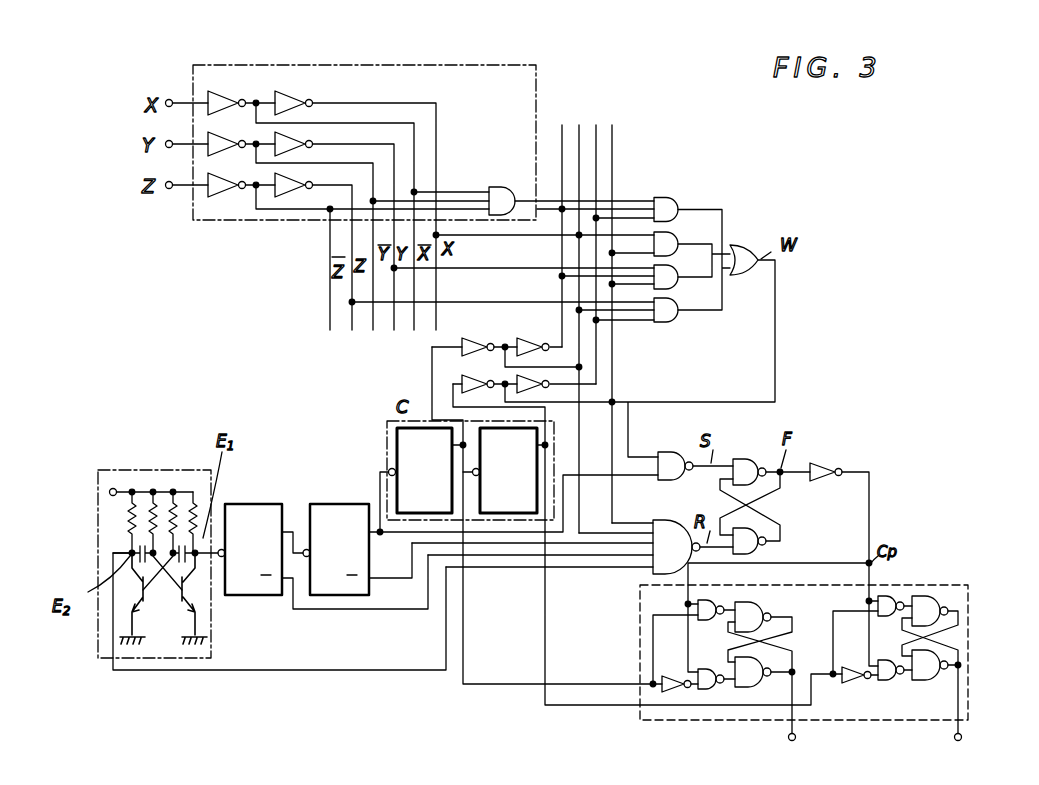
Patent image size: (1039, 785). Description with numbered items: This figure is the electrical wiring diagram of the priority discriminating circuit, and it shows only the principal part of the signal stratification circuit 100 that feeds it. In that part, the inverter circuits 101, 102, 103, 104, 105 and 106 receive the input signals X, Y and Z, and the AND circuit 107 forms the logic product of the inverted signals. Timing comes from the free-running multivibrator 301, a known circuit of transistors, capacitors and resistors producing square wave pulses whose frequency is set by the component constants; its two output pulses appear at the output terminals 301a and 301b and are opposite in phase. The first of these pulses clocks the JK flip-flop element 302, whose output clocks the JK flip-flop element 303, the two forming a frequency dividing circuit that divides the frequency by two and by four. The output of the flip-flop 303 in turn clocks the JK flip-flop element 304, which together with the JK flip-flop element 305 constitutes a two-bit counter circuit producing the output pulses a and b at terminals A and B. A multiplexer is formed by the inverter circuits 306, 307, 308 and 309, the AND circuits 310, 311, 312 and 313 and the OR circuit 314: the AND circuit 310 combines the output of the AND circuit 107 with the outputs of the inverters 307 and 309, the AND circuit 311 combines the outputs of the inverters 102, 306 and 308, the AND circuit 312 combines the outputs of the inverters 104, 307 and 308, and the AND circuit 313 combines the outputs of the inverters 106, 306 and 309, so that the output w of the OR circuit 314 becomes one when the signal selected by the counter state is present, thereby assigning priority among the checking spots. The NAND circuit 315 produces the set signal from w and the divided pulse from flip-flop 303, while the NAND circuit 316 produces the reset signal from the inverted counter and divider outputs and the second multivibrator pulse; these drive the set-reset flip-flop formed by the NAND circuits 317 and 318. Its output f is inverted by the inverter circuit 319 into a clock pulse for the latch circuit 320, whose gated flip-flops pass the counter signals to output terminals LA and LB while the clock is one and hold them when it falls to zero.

The signal stratification circuit 100 is at (540, 70).
The inverter circuit 101 is at (211, 97).
The inverter circuit 102 is at (285, 93).
The inverter circuit 103 is at (212, 138).
The inverter circuit 104 is at (287, 134).
The inverter circuit 105 is at (212, 180).
The inverter circuit 106 is at (292, 200).
The AND circuit 107 is at (504, 188).
The free-running multivibrator 301 is at (160, 543).
The output terminal 301a is at (196, 556).
The output terminal 301b is at (130, 552).
The JK flip-flop element 302 is at (251, 503).
The JK flip-flop element 303 is at (333, 503).
The JK flip-flop element 304 is at (396, 444).
The JK flip-flop element 305 is at (498, 518).
The inverter circuit 306 is at (474, 340).
The inverter circuit 307 is at (536, 332).
The inverter circuit 308 is at (462, 380).
The inverter circuit 309 is at (552, 392).
The AND circuit 310 is at (662, 198).
The AND circuit 311 is at (677, 238).
The AND circuit 312 is at (677, 288).
The AND circuit 313 is at (666, 322).
The OR circuit 314 is at (755, 237).
The NAND circuit 315 is at (672, 454).
The NAND circuit 316 is at (676, 521).
The NAND circuit 317 is at (741, 460).
The NAND circuit 318 is at (761, 553).
The inverter circuit 319 is at (827, 462).
The latch circuit 320 is at (804, 650).